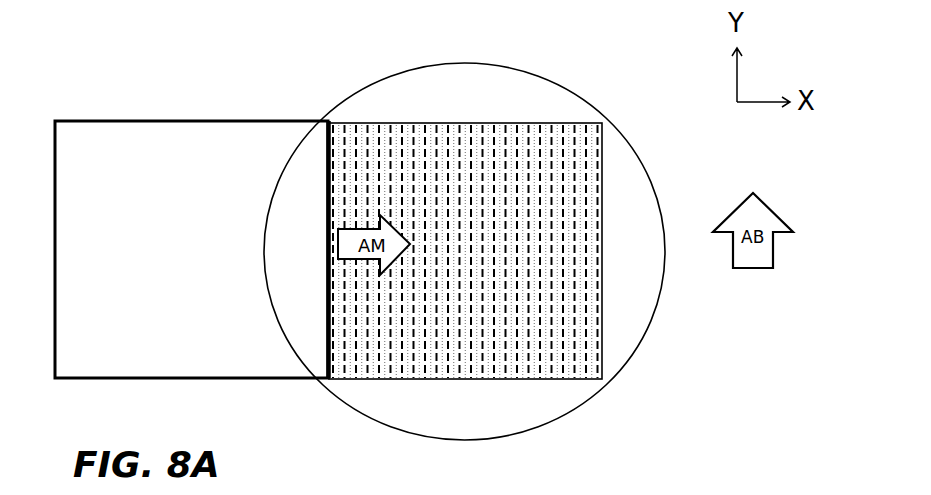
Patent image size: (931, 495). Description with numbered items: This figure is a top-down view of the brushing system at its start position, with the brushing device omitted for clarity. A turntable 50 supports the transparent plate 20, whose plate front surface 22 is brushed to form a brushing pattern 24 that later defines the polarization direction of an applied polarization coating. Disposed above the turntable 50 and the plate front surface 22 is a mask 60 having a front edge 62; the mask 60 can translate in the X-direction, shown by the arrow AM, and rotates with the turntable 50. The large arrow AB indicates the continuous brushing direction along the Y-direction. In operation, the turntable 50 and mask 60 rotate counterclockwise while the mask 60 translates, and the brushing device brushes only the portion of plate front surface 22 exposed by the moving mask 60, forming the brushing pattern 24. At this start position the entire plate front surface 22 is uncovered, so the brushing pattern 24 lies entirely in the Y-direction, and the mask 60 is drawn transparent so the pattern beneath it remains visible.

The transparent plate 20 is at (437, 123).
The plate front surface 22 is at (575, 150).
The brushing pattern 24 is at (588, 326).
The turntable 50 is at (568, 88).
The mask 60 is at (137, 121).
The front edge 62 is at (328, 135).